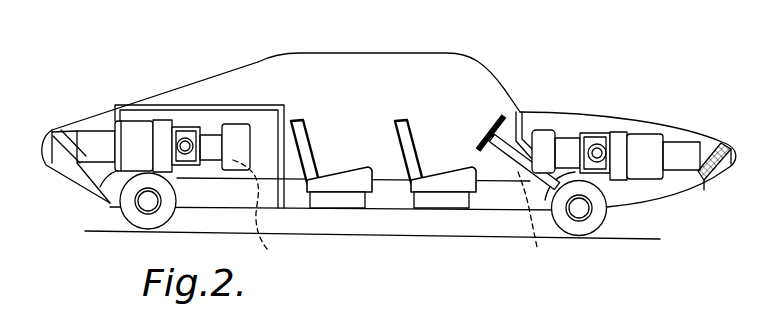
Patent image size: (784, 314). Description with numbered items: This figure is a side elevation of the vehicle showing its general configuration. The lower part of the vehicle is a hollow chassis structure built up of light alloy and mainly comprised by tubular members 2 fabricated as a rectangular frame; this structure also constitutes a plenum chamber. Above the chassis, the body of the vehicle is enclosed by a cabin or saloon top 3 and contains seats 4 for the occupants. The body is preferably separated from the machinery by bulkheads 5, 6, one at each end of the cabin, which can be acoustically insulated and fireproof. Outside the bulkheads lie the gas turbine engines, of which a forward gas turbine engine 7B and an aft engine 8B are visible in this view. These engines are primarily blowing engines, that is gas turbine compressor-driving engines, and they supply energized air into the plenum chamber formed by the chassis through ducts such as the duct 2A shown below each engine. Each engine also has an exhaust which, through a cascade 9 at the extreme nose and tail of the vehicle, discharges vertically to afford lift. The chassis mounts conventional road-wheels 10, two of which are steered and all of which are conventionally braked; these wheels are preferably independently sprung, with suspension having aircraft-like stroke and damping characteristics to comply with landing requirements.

The tubular members 2 is at (500, 200).
The ducts 2A is at (545, 255).
The cabin or saloon top 3 is at (320, 53).
The seats 4 is at (397, 130).
The bulkhead 5 is at (520, 114).
The bulkhead 6 is at (200, 107).
The forward gas turbine engine 7B is at (647, 140).
The aft engine 8B is at (128, 157).
The cascade 9 is at (67, 147).
The road-wheels 10 is at (597, 221).